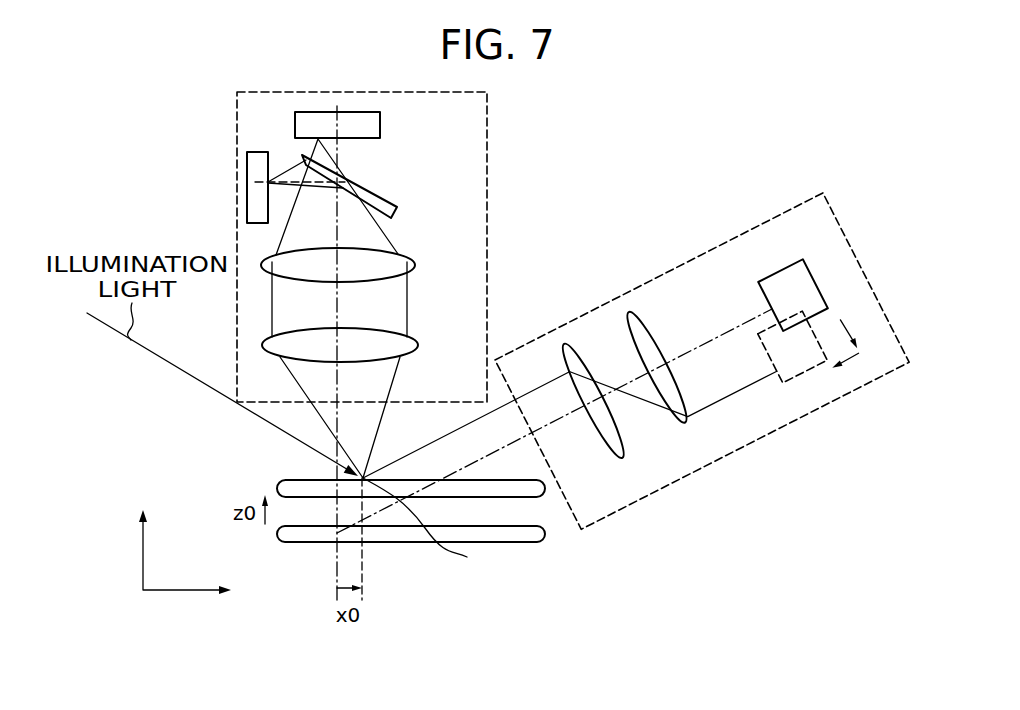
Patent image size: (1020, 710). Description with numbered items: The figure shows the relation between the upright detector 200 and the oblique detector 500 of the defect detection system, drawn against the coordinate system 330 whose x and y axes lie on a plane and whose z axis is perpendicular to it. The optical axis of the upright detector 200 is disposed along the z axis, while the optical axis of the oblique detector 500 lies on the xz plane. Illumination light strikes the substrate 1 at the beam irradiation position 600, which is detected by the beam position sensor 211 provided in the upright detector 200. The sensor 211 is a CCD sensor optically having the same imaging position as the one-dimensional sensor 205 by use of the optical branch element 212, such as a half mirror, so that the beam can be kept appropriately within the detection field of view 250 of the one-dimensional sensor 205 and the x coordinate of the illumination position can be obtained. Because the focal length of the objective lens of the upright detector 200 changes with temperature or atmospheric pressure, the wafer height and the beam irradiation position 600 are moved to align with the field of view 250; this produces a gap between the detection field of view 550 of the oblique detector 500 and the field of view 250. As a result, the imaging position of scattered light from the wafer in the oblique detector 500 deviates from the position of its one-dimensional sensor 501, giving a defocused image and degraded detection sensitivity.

The substrate 1 is at (293, 542).
The upright detector 200 is at (487, 143).
The one-dimensional sensor 205 is at (380, 125).
The beam position sensor 211 is at (247, 174).
The optical branch element 212 is at (380, 198).
The detection field of view 250 is at (438, 526).
The coordinate system 330 is at (143, 557).
The oblique detector 500 is at (673, 482).
The one-dimensional sensor 501 is at (758, 290).
The detection field of view 550 is at (337, 533).
The beam irradiation position 600 is at (364, 477).